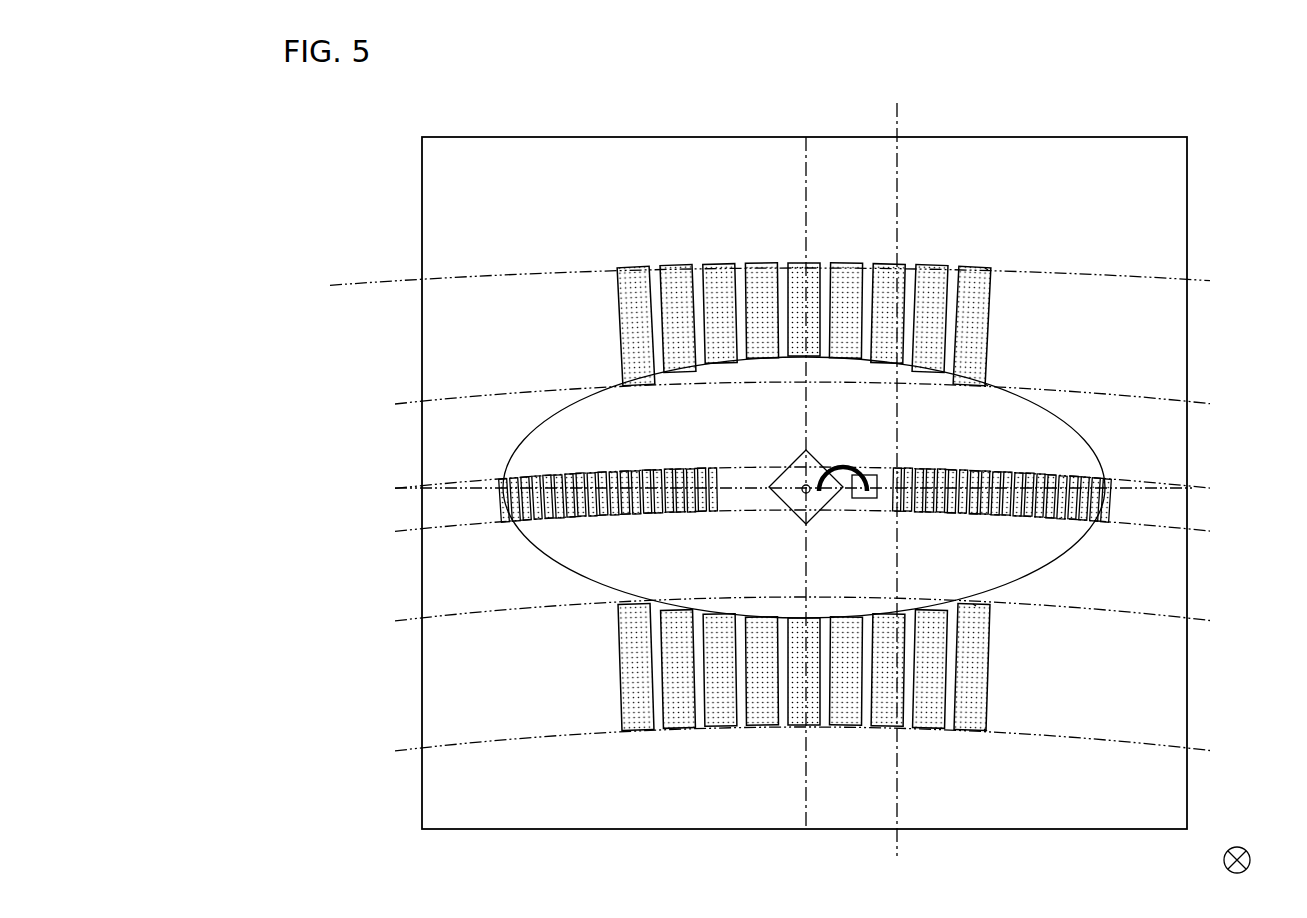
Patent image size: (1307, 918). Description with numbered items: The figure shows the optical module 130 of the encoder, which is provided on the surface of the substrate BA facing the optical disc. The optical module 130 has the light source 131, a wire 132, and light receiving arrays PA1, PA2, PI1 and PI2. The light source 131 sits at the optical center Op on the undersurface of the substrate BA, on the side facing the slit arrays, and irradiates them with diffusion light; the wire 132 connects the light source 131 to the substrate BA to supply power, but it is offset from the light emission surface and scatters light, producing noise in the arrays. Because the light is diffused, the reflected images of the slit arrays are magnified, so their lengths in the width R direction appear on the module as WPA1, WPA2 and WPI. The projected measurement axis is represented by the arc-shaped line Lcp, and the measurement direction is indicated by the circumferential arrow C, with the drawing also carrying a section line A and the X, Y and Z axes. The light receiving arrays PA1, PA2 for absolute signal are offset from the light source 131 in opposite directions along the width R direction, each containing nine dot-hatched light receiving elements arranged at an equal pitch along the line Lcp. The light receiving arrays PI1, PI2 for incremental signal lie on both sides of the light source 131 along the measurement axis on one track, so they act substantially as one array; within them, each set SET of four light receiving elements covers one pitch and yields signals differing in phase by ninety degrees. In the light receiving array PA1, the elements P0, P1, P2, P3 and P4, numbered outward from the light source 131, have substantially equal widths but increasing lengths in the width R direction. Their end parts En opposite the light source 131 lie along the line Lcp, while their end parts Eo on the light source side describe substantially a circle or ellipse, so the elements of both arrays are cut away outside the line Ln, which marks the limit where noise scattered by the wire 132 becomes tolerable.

The optical module 130 is at (733, 466).
The light source 131 is at (779, 493).
The wire 132 is at (852, 474).
The substrate BA is at (535, 136).
The line Lcp is at (746, 285).
The length WPA2 is at (407, 286).
The length WPI is at (402, 490).
The length WPA1 is at (405, 623).
The line Ln is at (505, 446).
The light receiving array PA2 is at (594, 313).
The light receiving array PA1 is at (722, 698).
The light receiving element P0 is at (795, 728).
The light receiving element P1 is at (841, 728).
The light receiving element P2 is at (886, 728).
The light receiving element P3 is at (924, 728).
The light receiving element P4 is at (972, 730).
The end parts En is at (986, 270).
The end parts Eo is at (985, 383).
The light receiving array PI1 is at (608, 516).
The light receiving array PI2 is at (951, 523).
The set of light receiving elements SET is at (696, 514).
The optical center Op is at (802, 494).
The section line A- A is at (897, 103).
The measurement axis C is at (985, 237).
The width R direction R is at (1206, 829).
The X axis X is at (1224, 860).
The Y axis Y is at (1237, 847).
The Z axis Z is at (1248, 862).